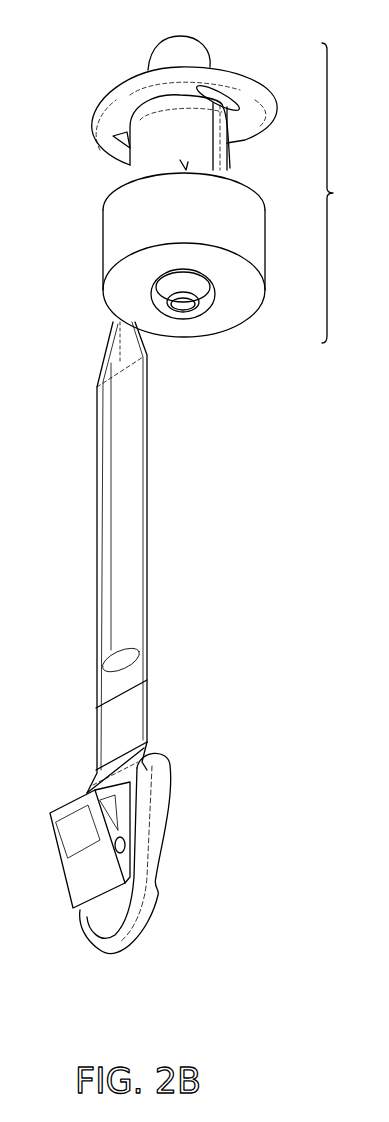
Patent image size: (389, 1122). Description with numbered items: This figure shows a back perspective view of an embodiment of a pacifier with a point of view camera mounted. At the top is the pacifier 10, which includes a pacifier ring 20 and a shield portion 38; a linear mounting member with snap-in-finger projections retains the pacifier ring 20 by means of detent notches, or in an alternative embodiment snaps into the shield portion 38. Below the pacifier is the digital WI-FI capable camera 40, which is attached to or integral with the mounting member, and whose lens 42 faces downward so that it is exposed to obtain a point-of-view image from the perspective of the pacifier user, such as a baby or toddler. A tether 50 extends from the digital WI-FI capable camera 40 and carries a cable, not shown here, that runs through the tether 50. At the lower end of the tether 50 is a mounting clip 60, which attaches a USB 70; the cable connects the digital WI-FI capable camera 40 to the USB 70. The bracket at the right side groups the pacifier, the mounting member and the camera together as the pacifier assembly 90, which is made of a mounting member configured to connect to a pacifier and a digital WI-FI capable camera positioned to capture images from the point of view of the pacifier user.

The pacifier 10 is at (170, 55).
The pacifier ring 20 is at (212, 163).
The shield portion 38 is at (255, 122).
The digital WI-FI capable camera 40 is at (113, 242).
The lens 42 is at (183, 306).
The tether 50 is at (138, 512).
The mounting clip 60 is at (147, 857).
The USB 70 is at (75, 868).
The pacifier assembly 90 is at (344, 193).